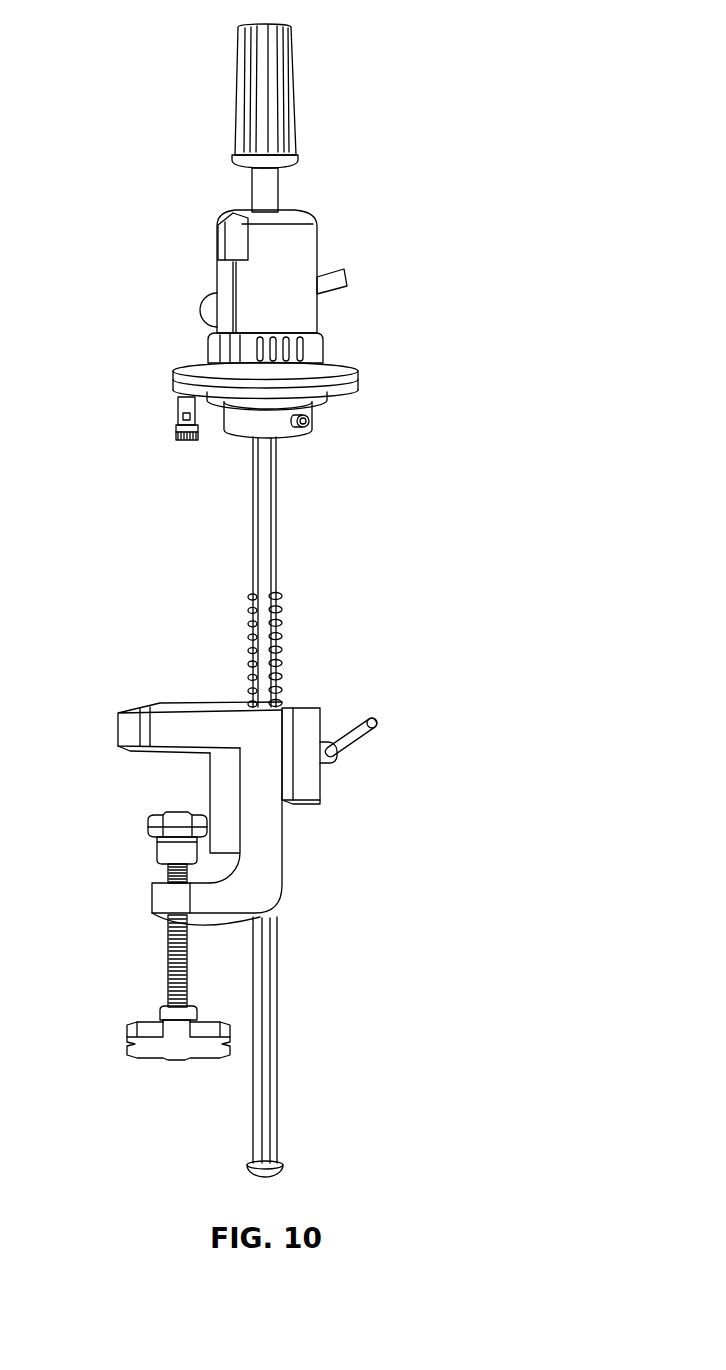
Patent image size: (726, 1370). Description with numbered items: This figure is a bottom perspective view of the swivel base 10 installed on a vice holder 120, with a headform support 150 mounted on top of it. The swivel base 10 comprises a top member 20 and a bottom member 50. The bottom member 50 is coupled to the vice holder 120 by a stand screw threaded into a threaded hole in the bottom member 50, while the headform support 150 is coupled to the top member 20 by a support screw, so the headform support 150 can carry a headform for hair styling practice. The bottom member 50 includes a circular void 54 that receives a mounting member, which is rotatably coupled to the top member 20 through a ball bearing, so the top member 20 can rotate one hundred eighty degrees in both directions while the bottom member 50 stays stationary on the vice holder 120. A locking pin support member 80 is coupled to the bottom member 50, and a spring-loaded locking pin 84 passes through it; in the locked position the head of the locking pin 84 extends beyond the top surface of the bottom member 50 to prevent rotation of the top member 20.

The swivel base 10 is at (392, 368).
The top member 20 is at (177, 373).
The bottom member 50 is at (352, 389).
The circular void 54 is at (273, 425).
The locking pin support member 80 is at (175, 408).
The locking pin 84 is at (175, 438).
The vice holder 120 is at (263, 628).
The headform support 150 is at (302, 252).